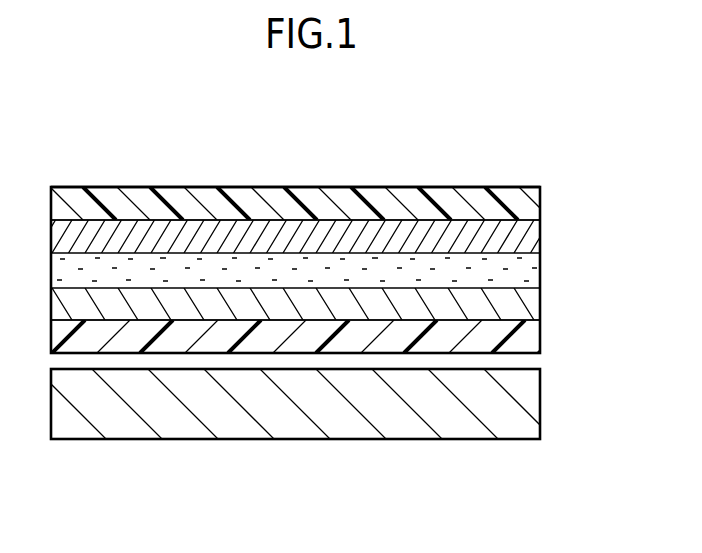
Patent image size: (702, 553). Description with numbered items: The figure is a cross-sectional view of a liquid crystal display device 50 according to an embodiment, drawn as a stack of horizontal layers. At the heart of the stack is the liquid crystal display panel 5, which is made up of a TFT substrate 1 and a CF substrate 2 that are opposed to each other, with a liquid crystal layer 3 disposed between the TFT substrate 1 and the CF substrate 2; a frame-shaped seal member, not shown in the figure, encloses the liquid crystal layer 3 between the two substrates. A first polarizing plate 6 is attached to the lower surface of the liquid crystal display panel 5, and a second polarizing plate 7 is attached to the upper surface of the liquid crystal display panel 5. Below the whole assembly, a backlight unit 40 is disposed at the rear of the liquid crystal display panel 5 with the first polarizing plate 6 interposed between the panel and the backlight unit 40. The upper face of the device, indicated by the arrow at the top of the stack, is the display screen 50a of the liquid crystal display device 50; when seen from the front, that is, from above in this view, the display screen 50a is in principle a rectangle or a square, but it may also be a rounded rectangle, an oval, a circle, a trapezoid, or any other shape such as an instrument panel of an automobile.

The liquid crystal display device 50 is at (92, 150).
The display screen 50a is at (470, 187).
The second polarizing plate 7 is at (525, 202).
The CF substrate 2 is at (525, 238).
The liquid crystal layer 3 is at (525, 270).
The TFT substrate 1 is at (525, 303).
The first polarizing plate 6 is at (525, 343).
The liquid crystal display panel 5 is at (605, 221).
The backlight unit 40 is at (525, 397).